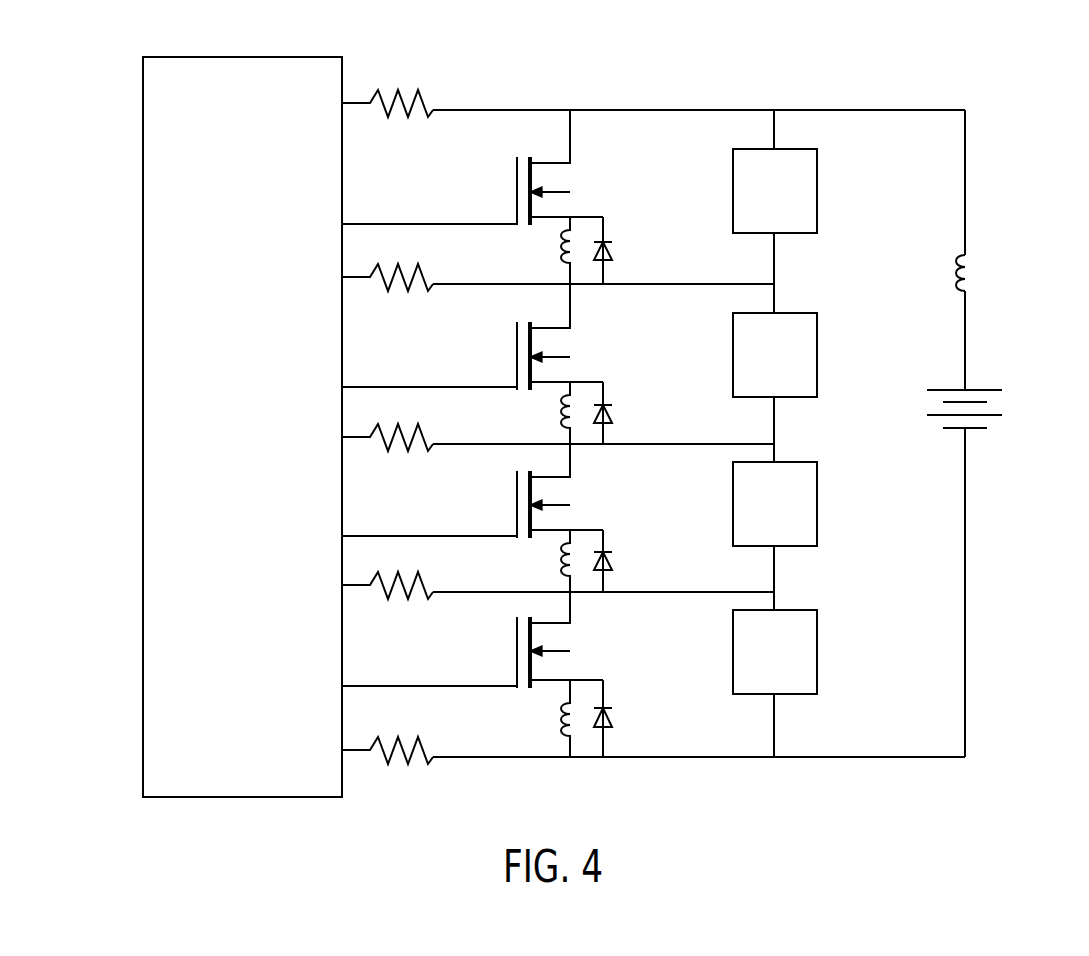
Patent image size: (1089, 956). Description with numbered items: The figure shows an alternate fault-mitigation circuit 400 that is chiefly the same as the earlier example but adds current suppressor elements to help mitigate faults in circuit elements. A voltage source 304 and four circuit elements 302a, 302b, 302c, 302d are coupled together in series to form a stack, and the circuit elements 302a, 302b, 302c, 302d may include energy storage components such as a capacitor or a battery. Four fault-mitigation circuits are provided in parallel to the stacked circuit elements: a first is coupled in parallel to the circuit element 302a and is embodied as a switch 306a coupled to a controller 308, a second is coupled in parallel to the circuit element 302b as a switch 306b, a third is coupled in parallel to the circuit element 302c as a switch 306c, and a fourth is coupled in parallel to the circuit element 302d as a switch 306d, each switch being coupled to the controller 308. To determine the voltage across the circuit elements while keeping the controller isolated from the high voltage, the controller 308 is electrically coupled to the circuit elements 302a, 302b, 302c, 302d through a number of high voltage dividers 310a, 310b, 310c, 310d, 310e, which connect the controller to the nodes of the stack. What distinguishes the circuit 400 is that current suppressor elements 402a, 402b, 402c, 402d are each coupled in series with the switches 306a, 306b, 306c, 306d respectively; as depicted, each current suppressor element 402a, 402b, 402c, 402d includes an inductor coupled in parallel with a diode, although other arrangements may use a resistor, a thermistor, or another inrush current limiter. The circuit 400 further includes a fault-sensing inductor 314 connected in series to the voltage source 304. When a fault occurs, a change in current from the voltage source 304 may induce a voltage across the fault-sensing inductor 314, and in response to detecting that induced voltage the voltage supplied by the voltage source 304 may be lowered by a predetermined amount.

The circuit 400 is at (1022, 88).
The controller 308 is at (143, 405).
The high voltage divider 310a is at (413, 91).
The high voltage divider 310b is at (420, 289).
The high voltage divider 310c is at (420, 450).
The high voltage divider 310d is at (422, 598).
The high voltage divider 310e is at (420, 763).
The switch 306a is at (595, 181).
The switch 306b is at (598, 333).
The switch 306c is at (598, 491).
The switch 306d is at (598, 646).
The current suppressor element 402a is at (632, 235).
The current suppressor element 402b is at (631, 402).
The current suppressor element 402c is at (634, 540).
The current suppressor element 402d is at (631, 703).
The circuit element 302a is at (817, 190).
The circuit element 302b is at (817, 353).
The circuit element 302c is at (817, 503).
The circuit element 302d is at (817, 655).
The fault-sensing inductor 314 is at (972, 270).
The voltage source 304 is at (990, 389).